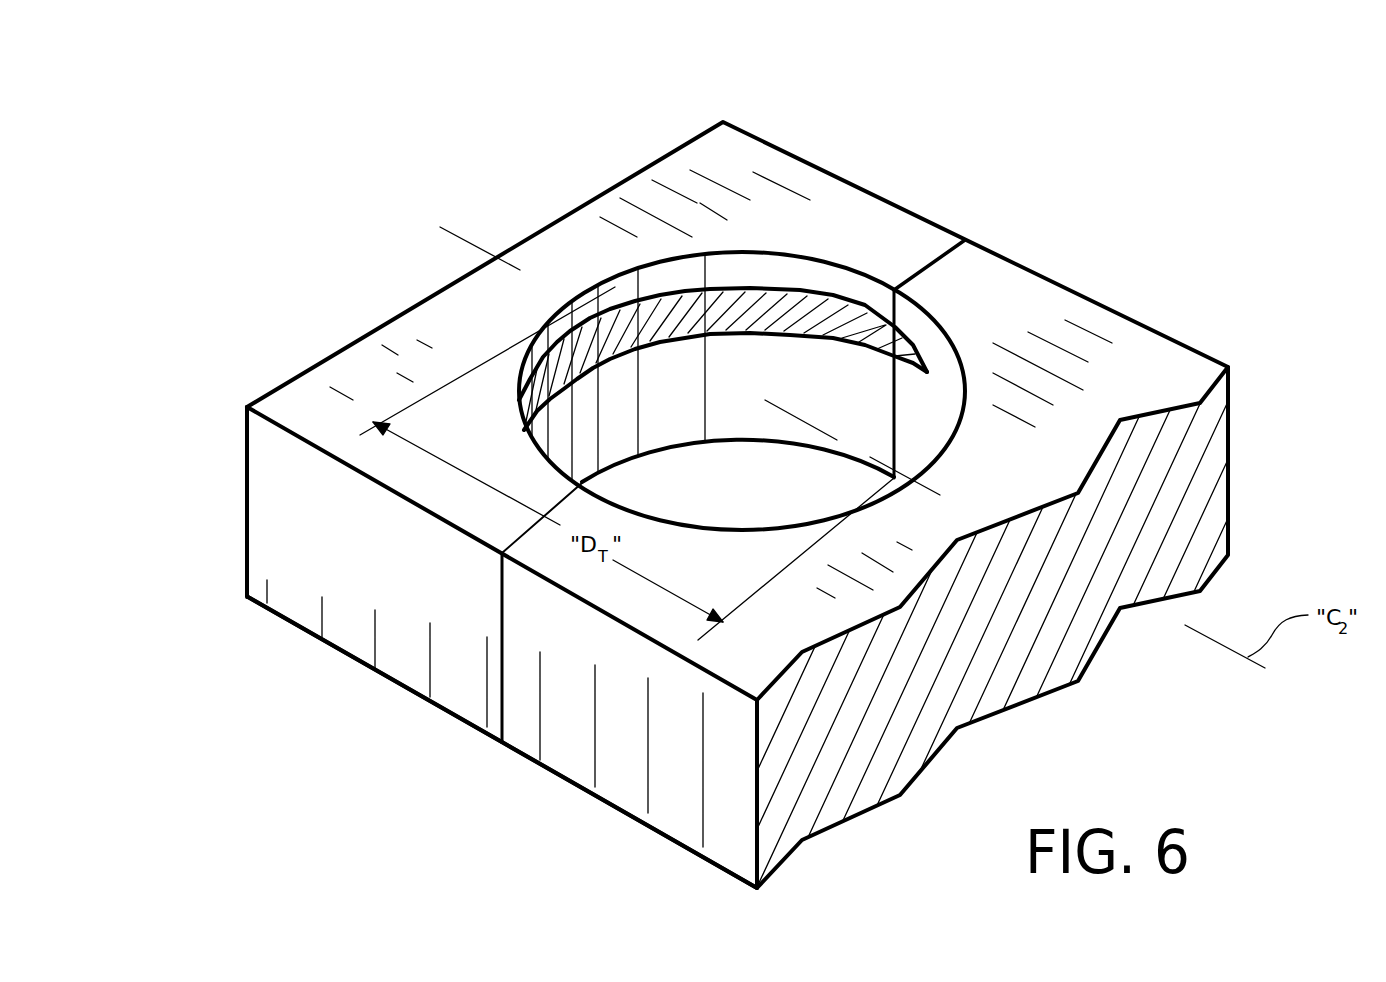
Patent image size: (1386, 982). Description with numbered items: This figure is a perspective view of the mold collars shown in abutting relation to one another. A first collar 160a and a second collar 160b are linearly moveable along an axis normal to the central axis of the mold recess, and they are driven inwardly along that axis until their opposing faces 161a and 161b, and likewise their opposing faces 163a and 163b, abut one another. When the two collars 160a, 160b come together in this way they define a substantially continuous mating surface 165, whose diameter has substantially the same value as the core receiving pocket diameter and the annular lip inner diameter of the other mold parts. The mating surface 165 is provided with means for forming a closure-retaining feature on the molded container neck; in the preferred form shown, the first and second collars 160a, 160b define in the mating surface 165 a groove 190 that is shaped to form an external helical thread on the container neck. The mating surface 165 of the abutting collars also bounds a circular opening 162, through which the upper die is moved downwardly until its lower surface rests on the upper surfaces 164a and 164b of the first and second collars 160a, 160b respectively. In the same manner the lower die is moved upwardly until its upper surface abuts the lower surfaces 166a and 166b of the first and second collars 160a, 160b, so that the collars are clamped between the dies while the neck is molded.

The first collar 160a is at (813, 162).
The second collar 160b is at (1217, 353).
The opposing face of first collar 161a is at (502, 728).
The opposing face of second collar 161b is at (502, 672).
The circular opening 162 is at (700, 488).
The opposing face of first collar 163a is at (923, 275).
The opposing face of second collar 163b is at (947, 245).
The upper surface of first collar 164a is at (912, 238).
The upper surface of second collar 164b is at (1193, 387).
The mating surface 165 is at (613, 287).
The lower surface of first collar 166a is at (328, 643).
The lower surface of second collar 166b is at (603, 803).
The groove 190 is at (542, 367).